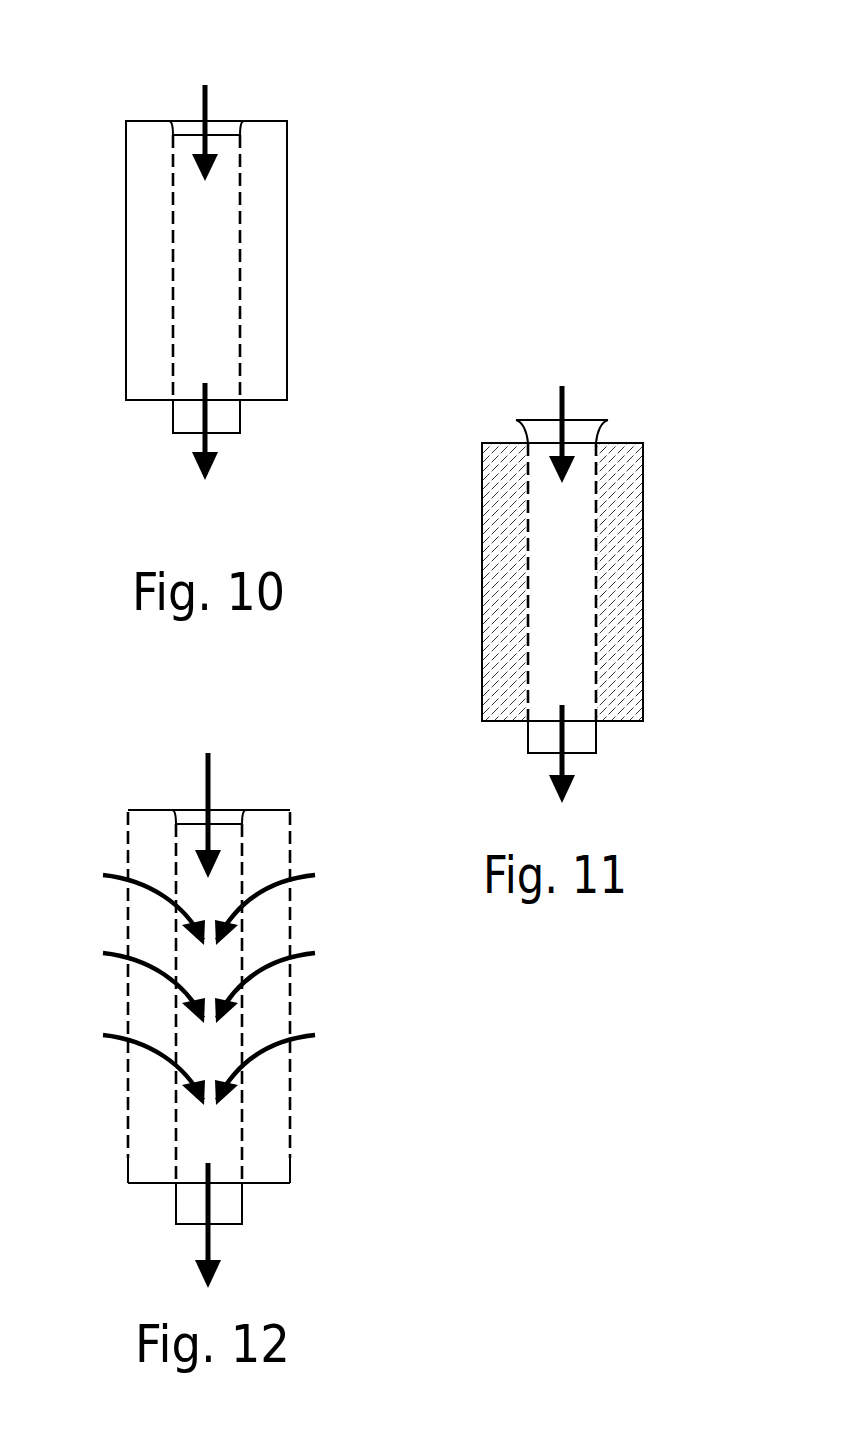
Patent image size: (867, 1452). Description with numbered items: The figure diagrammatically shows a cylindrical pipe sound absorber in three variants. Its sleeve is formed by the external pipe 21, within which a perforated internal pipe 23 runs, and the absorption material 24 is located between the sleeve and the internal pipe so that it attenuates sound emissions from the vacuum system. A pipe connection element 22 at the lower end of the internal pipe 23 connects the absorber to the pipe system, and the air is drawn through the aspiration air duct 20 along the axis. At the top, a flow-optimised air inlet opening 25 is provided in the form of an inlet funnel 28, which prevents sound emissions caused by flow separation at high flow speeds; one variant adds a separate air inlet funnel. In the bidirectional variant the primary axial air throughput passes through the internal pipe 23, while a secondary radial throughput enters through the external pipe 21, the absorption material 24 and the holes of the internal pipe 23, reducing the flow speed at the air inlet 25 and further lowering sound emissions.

In FIG. 10, the aspiration air duct 20 is at (225, 350).
In FIG. 11, the aspiration air duct 20 is at (578, 648).
In FIG. 12, the aspiration air duct 20 is at (228, 1140).
In FIG. 10, the external pipe 21 is at (290, 266).
In FIG. 11, the external pipe 21 is at (645, 560).
In FIG. 12, the external pipe 21 is at (293, 1012).
In FIG. 10, the pipe connection element 22 is at (172, 418).
In FIG. 11, the pipe connection element 22 is at (527, 742).
In FIG. 12, the pipe connection element 22 is at (247, 1205).
In FIG. 10, the perforated internal pipe 23 is at (238, 232).
In FIG. 11, the perforated internal pipe 23 is at (594, 520).
In FIG. 12, the perforated internal pipe 23 is at (240, 897).
In FIG. 10, the absorption material 24 is at (267, 380).
In FIG. 11, the absorption material 24 is at (627, 687).
In FIG. 12, the absorption material 24 is at (267, 1170).
In FIG. 10, the air inlet opening 25 is at (233, 104).
In FIG. 11, the air inlet opening 25 is at (599, 394).
In FIG. 12, the air inlet opening 25 is at (237, 784).
In FIG. 10, the inlet funnel 28 is at (175, 121).
In FIG. 11, the inlet funnel 28 is at (528, 420).
In FIG. 12, the inlet funnel 28 is at (175, 810).